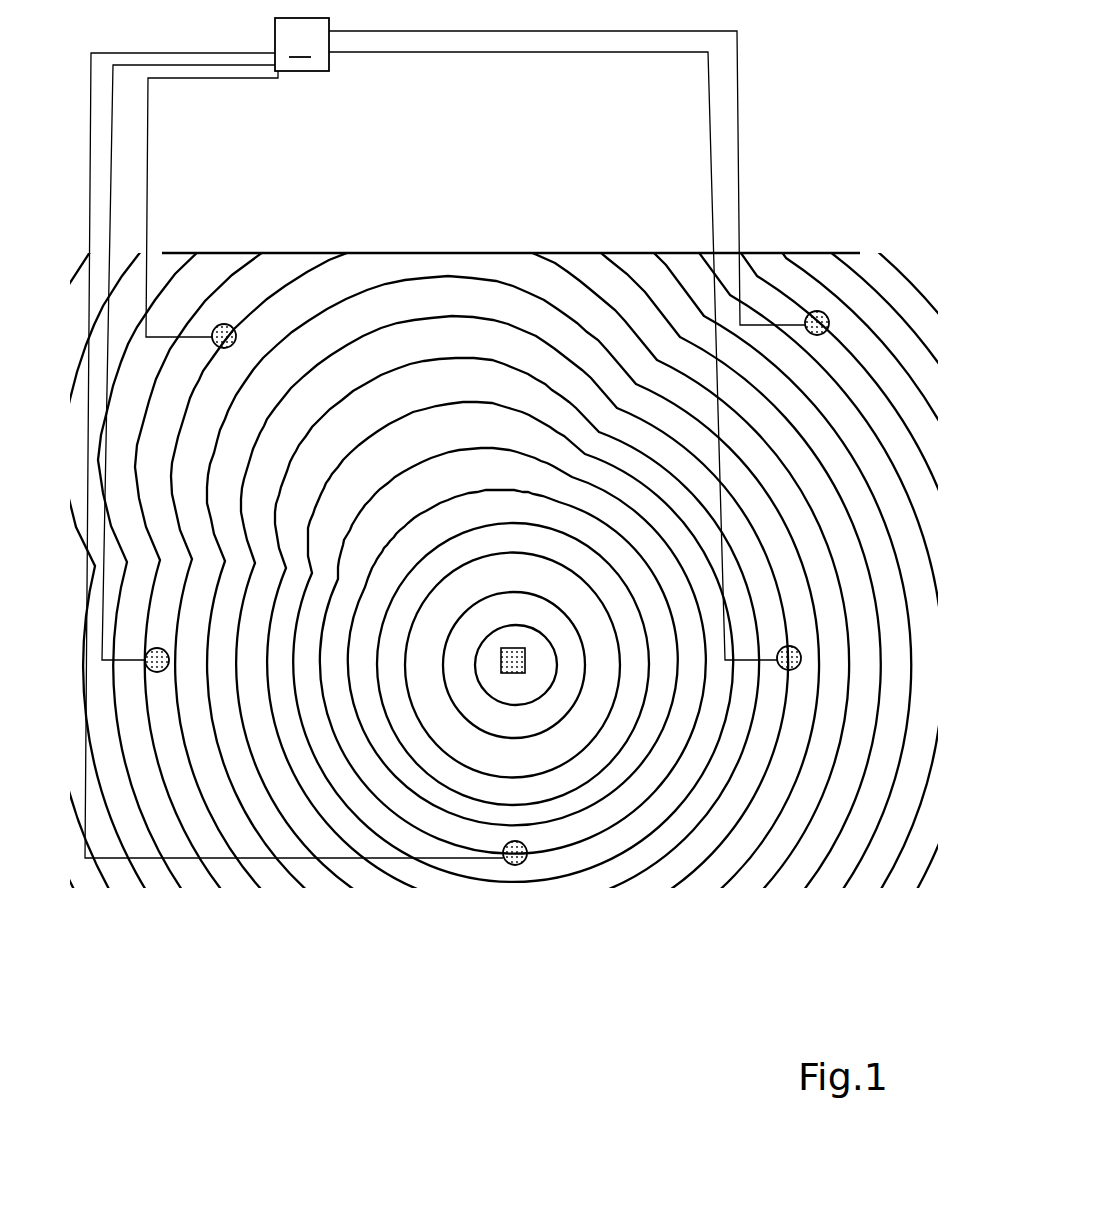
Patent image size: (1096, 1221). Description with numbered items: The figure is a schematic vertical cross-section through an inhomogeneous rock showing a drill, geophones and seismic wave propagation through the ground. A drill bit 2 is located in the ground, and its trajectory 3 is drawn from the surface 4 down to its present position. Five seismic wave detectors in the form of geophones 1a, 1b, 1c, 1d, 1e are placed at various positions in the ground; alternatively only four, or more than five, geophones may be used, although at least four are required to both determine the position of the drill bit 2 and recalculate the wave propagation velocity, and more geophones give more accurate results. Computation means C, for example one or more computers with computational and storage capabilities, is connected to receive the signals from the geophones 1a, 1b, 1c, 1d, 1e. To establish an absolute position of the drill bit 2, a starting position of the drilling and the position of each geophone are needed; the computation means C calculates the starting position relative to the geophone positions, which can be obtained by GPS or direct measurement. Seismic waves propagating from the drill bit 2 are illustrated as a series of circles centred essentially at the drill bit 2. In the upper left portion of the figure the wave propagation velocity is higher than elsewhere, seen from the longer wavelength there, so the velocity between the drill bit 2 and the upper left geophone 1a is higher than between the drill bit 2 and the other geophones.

The geophone 1a is at (220, 325).
The geophone 1b is at (157, 672).
The geophone 1c is at (515, 866).
The geophone 1d is at (789, 670).
The geophone 1e is at (819, 311).
The drill bit 2 is at (525, 663).
The trajectory 3 is at (497, 390).
The surface 4 is at (636, 251).
The computation means C is at (445, 438).